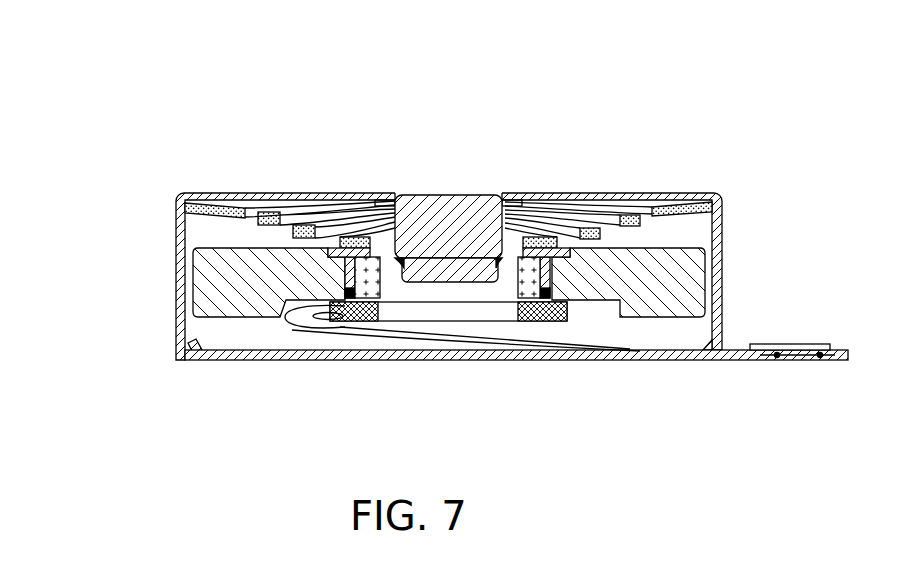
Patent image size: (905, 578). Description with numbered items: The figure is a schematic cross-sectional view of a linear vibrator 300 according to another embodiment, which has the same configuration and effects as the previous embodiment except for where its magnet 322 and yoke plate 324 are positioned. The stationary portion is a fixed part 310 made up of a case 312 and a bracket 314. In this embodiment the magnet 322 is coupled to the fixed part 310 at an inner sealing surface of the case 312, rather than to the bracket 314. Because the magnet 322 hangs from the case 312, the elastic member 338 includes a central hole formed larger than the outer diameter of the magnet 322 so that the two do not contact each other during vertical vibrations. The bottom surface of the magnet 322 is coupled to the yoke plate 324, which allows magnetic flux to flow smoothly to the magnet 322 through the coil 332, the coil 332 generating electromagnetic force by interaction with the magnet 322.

The linear vibrator 300 is at (430, 242).
The fixed part 310 is at (430, 282).
The case 312 is at (178, 318).
The bracket 314 is at (180, 362).
The magnet 322 is at (470, 213).
The yoke plate 324 is at (413, 277).
The coil 332 is at (367, 300).
The elastic member 338 is at (662, 205).